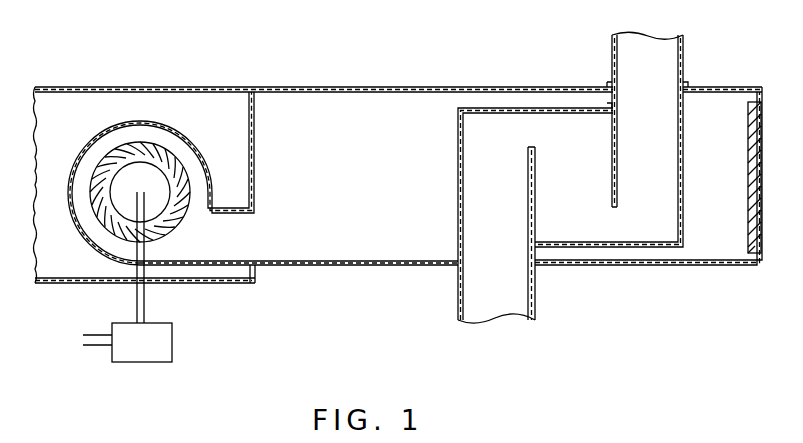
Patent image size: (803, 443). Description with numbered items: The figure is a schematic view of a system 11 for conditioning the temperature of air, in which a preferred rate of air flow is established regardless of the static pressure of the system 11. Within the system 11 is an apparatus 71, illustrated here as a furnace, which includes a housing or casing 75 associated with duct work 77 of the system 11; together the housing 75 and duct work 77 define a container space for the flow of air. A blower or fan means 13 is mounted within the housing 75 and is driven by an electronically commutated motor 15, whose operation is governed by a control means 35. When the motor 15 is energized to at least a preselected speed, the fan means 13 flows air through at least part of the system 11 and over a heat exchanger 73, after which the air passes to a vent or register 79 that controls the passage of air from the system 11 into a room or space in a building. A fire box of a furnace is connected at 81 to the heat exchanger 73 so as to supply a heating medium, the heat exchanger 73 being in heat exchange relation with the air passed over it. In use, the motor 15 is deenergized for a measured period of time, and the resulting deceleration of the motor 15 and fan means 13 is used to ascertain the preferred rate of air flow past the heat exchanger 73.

The system 11 is at (406, 47).
The fan means 13 is at (184, 217).
The electronically commutated motor 15 is at (122, 181).
The control means 35 is at (172, 333).
The apparatus 71 is at (373, 177).
The heat exchanger 73 is at (577, 177).
The housing 75 is at (164, 126).
The duct work 77 is at (477, 87).
The register 79 is at (765, 100).
The connection to heat exchanger 81 is at (458, 307).